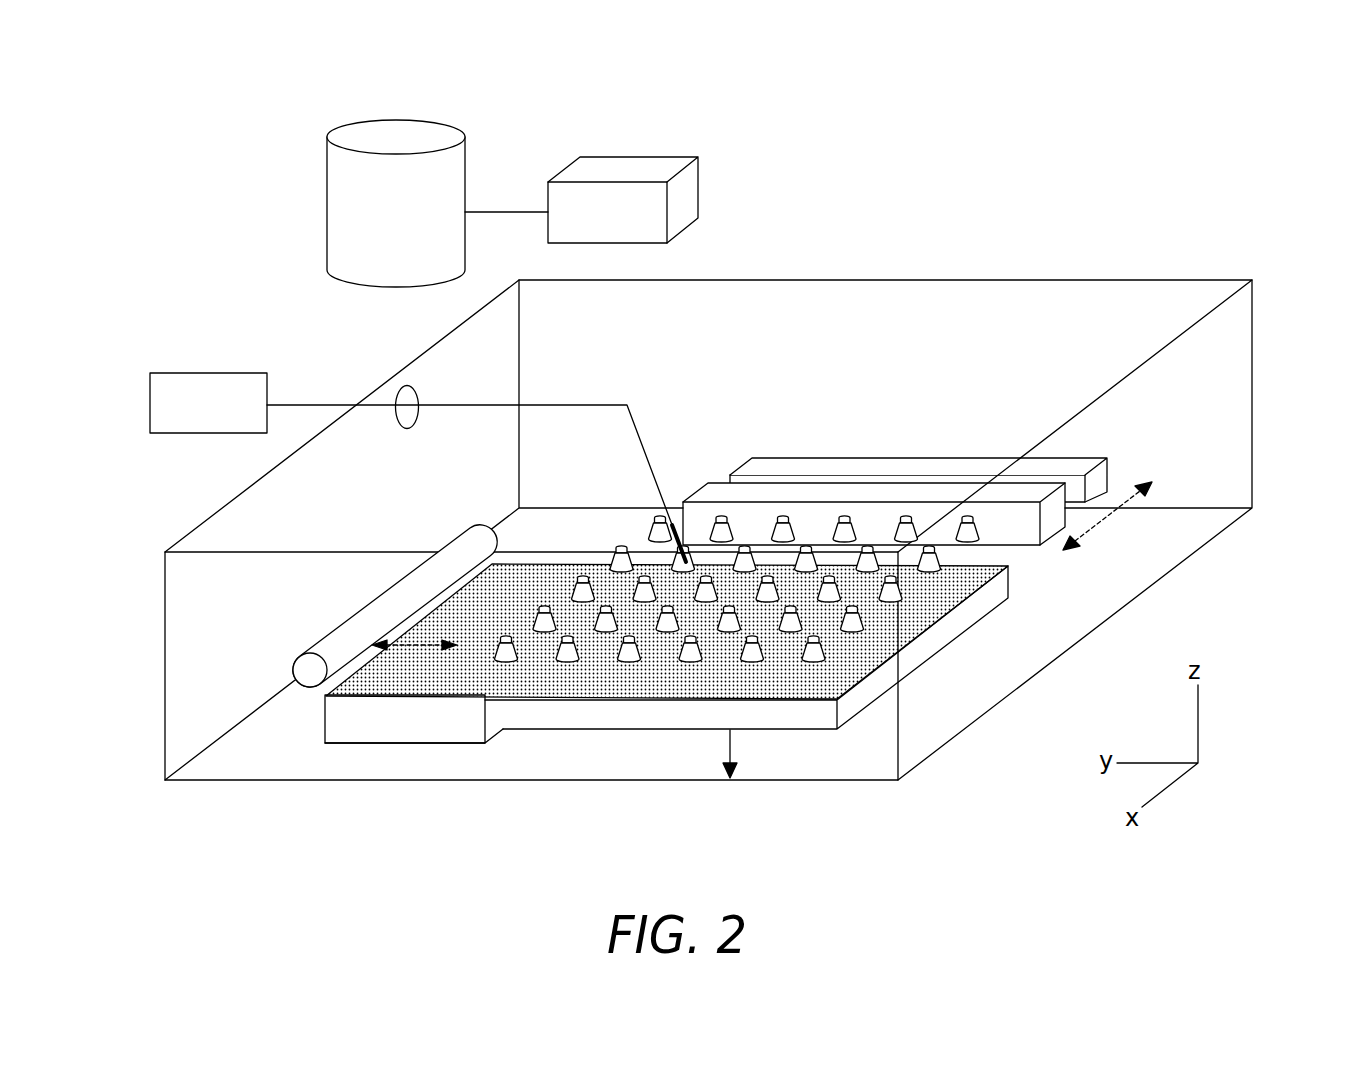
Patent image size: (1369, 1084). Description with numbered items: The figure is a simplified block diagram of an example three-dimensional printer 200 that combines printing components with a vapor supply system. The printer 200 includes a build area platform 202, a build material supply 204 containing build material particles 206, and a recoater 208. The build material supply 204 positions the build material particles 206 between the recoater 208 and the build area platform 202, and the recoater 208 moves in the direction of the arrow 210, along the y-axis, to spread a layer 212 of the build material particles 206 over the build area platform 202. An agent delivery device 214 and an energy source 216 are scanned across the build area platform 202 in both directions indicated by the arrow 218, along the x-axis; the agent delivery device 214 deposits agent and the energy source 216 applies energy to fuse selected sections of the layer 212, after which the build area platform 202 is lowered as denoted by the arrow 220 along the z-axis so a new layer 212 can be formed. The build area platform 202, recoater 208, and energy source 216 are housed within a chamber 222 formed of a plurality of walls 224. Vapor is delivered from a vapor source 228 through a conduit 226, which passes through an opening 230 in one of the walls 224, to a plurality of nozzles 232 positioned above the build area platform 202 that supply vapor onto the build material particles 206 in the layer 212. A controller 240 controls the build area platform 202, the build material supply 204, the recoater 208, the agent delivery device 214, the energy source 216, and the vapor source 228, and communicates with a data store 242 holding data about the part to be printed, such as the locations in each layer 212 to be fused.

The three-dimensional (3D) printer 200 is at (341, 64).
The build area platform 202 is at (920, 665).
The build material supply 204 is at (392, 745).
The build material particles 206 is at (357, 695).
The recoater 208 is at (407, 570).
The arrow 210 is at (378, 640).
The layer 212 is at (960, 607).
The agent delivery device 214 is at (845, 483).
The energy source 216 is at (957, 458).
The arrow 218 is at (1102, 523).
The arrow 220 is at (730, 748).
The chamber 222 is at (708, 489).
The walls 224 is at (1107, 278).
The conduit 226 is at (583, 405).
The vapor source 228 is at (230, 420).
The opening 230 is at (413, 389).
The nozzles 232 is at (653, 524).
The controller 240 is at (635, 156).
The data store 242 is at (422, 229).